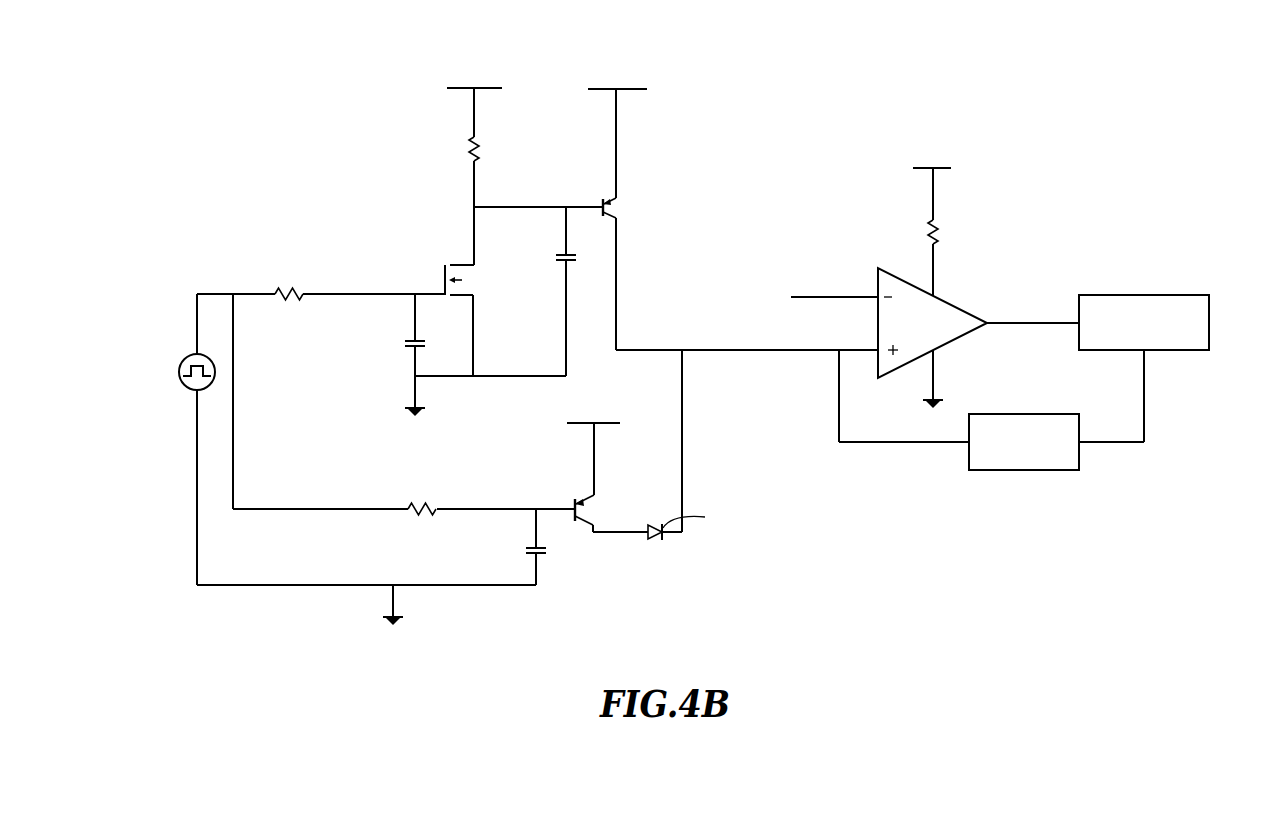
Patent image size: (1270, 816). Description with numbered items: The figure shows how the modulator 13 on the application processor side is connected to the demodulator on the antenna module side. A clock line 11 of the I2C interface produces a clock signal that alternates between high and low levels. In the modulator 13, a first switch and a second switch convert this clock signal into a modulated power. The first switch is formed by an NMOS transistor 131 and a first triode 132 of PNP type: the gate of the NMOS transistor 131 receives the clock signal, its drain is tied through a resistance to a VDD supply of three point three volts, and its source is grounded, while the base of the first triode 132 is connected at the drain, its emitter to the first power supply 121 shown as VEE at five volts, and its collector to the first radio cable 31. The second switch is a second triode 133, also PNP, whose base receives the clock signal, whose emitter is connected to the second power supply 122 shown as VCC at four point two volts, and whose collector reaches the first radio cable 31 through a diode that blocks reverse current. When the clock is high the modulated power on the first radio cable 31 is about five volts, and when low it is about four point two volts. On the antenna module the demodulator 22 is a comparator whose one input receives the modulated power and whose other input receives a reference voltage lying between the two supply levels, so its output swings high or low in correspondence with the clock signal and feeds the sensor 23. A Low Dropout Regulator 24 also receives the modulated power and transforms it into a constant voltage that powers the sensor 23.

The clock line 11 is at (187, 359).
The modulator 13 is at (327, 165).
The first power supply 121 is at (634, 87).
The second power supply 122 is at (618, 421).
The NMOS transistor 131 is at (447, 263).
The first triode 132 is at (617, 212).
The second triode 133 is at (592, 512).
The demodulator 22 is at (938, 307).
The sensor 23 is at (1160, 298).
The Low Dropout Regulator 24 is at (1010, 425).
The first radio cable 31 is at (692, 348).